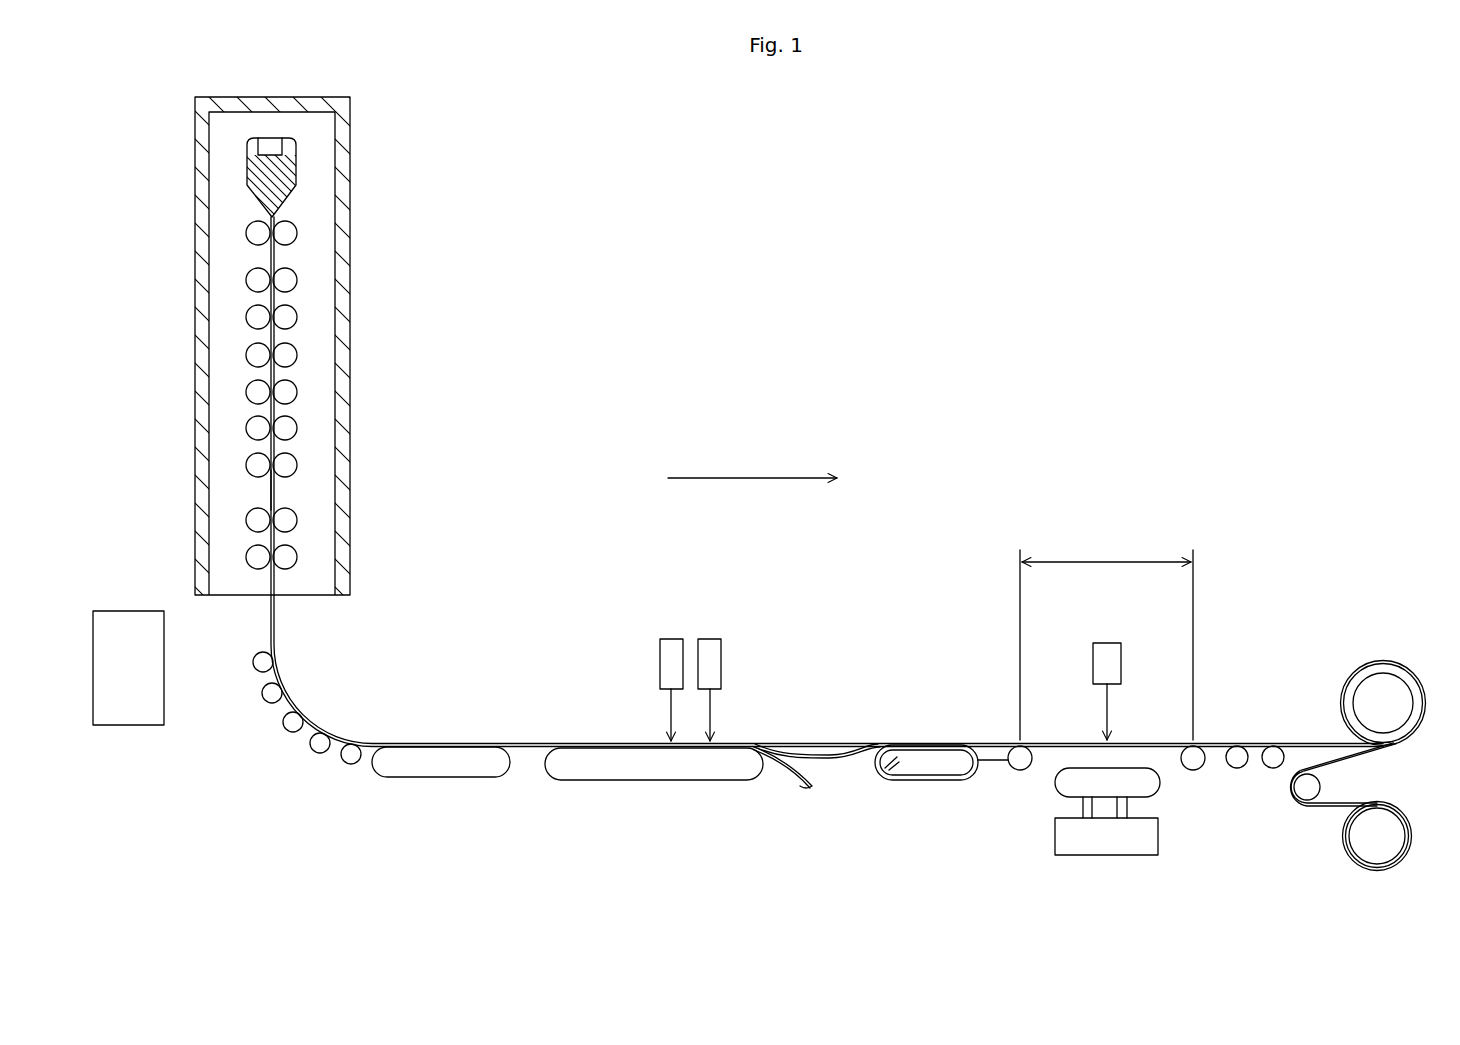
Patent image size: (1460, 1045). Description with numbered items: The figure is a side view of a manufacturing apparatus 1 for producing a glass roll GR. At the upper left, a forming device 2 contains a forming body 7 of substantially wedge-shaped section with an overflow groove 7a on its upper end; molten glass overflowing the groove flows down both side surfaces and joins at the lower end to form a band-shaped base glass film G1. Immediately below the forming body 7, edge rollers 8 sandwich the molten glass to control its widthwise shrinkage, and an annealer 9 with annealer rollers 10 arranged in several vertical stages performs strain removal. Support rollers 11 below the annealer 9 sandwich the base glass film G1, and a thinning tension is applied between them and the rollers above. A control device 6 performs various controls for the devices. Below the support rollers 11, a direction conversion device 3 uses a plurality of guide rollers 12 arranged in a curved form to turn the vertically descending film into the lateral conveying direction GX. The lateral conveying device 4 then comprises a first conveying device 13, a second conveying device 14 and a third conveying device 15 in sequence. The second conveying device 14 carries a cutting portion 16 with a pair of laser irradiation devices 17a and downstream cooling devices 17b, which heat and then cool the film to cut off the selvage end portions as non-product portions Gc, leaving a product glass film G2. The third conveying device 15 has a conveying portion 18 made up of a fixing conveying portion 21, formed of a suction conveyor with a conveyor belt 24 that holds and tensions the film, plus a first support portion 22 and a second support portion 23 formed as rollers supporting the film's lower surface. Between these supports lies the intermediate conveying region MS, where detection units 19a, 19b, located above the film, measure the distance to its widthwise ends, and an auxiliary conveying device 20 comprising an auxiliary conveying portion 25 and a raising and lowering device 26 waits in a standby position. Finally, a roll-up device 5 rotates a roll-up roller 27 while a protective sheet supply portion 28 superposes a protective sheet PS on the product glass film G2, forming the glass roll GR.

The manufacturing apparatus 1 is at (998, 280).
The forming device 2 is at (321, 322).
The direction conversion device 3 is at (280, 744).
The lateral conveying device 4 is at (567, 710).
The roll-up device 5 is at (1342, 779).
The control device 6 is at (125, 597).
The forming body 7 is at (318, 133).
The overflow groove 7a is at (272, 150).
The edge rollers 8 is at (287, 234).
The annealer 9 is at (326, 395).
The annealer rollers 10 is at (289, 316).
The support rollers 11 is at (289, 556).
The guide rollers 12 is at (267, 692).
The first conveying device 13 is at (448, 791).
The second conveying device 14 is at (653, 795).
The third conveying device 15 is at (1025, 737).
The cutting portion 16 is at (691, 643).
The laser irradiation devices 17a is at (672, 652).
The cooling devices 17b is at (717, 665).
The conveying portion 18 is at (988, 789).
The first detection unit 19a is at (1107, 656).
The second detection unit 19b is at (1130, 665).
The auxiliary conveying device 20 is at (1090, 857).
The fixing conveying portion 21 is at (882, 780).
The first support portion 22 is at (1020, 771).
The second support portion 23 is at (1192, 771).
The conveyor belt 24 is at (917, 783).
The auxiliary conveying portion 25 is at (1067, 788).
The raising and lowering device 26 is at (1106, 861).
The roll-up roller 27 is at (1355, 682).
The protective sheet supply portion 28 is at (1388, 876).
The base glass film G1 is at (277, 491).
The product glass film G2 is at (847, 751).
The non-product portions Gc is at (803, 763).
The glass roll GR is at (1346, 689).
The protective sheet PS is at (1347, 764).
The intermediate conveying region MS is at (1106, 634).
The lateral conveying direction GX is at (752, 463).